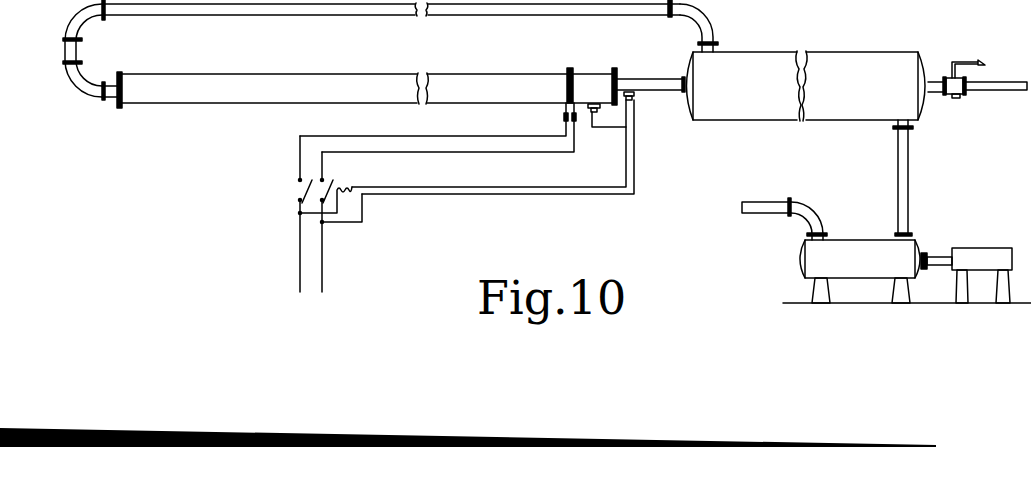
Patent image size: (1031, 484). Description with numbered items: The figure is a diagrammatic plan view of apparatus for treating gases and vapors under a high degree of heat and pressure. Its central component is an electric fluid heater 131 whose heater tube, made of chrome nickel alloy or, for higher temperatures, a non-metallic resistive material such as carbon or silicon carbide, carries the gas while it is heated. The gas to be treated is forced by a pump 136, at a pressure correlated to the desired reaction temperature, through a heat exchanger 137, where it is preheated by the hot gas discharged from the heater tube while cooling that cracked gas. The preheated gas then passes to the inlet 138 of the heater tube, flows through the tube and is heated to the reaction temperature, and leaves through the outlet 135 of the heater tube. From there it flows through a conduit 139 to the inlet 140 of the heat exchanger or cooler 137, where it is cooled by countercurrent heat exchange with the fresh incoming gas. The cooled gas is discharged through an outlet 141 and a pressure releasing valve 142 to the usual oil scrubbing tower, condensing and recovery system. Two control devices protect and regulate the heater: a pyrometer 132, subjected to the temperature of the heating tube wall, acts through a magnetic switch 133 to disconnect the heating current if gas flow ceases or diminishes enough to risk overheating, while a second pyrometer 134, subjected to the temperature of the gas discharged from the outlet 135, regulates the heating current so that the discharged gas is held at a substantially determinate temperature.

The electric fluid heater 131 is at (232, 80).
The pyrometer 132 is at (592, 113).
The magnetic switch 133 is at (303, 192).
The pyrometer 134 is at (633, 102).
The outlet 135 is at (618, 68).
The pump 136 is at (843, 243).
The heat exchanger 137 is at (837, 52).
The inlet 138 is at (112, 97).
The conduit 139 is at (638, 60).
The inlet 140 is at (683, 77).
The outlet 141 is at (933, 80).
The pressure releasing valve 142 is at (957, 98).